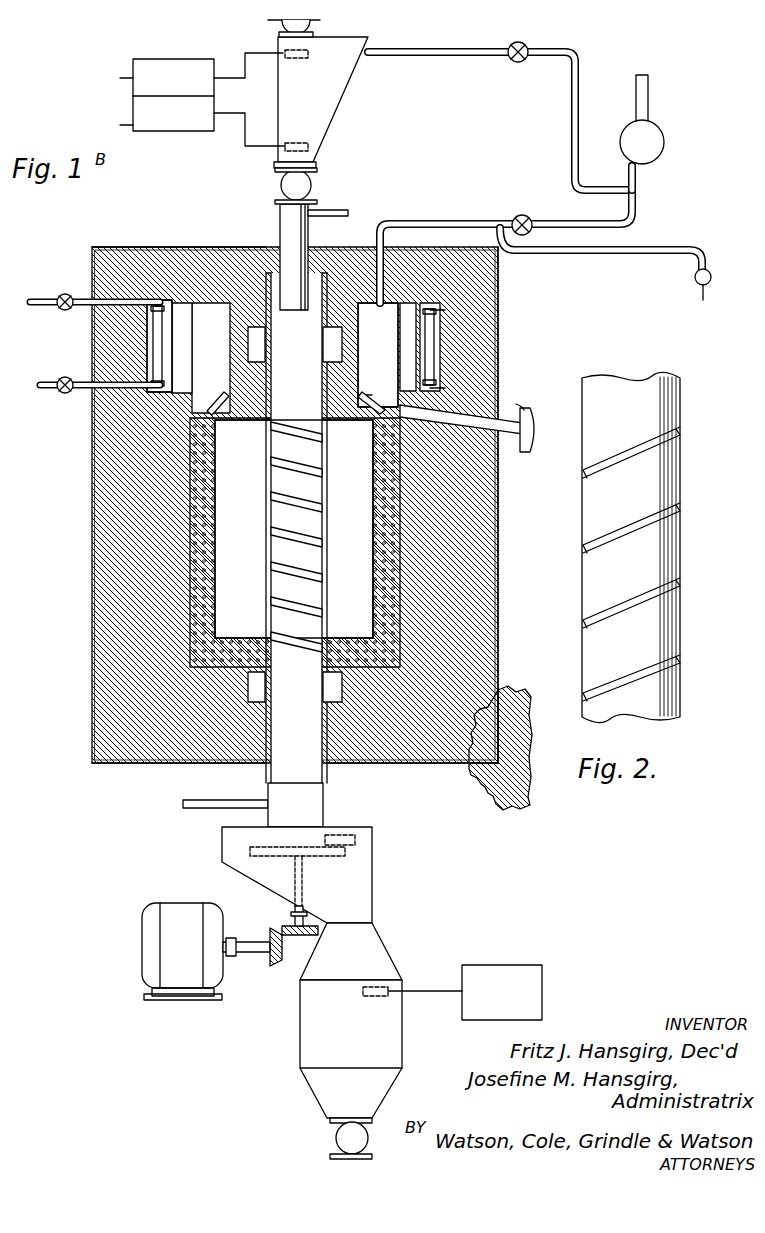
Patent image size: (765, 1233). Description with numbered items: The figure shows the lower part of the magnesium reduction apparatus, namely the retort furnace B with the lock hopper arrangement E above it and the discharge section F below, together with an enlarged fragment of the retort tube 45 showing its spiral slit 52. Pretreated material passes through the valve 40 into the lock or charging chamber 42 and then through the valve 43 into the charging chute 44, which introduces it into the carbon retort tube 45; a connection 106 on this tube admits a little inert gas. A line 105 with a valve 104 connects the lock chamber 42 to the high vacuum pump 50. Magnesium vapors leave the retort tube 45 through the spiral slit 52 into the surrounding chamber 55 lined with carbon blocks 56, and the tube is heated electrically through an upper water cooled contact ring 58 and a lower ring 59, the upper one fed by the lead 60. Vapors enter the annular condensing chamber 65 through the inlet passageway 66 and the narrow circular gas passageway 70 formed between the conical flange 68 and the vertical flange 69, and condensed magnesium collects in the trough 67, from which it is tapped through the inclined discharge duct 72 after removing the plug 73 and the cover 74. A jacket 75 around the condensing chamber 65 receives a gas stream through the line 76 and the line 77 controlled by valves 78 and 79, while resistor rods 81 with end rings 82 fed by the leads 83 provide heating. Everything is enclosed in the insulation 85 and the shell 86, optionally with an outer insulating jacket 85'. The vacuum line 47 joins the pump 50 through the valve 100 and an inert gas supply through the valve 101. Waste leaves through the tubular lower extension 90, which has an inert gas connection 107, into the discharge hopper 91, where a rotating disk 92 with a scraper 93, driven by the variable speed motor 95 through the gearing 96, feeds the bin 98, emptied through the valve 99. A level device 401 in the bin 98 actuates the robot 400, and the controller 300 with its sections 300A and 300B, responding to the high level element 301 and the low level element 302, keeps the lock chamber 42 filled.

In FIG. 1B, the valve 40 is at (303, 24).
In FIG. 1B, the lock or charging chamber 42 is at (333, 118).
In FIG. 1B, the valve 43 is at (309, 186).
In FIG. 1B, the charging chute 44 is at (284, 219).
In FIG. 1B, the retort tube 45 is at (316, 562).
In FIG. 2, the retort tube 45 is at (660, 500).
In FIG. 1B, the vacuum line 47 is at (468, 219).
In FIG. 1B, the high vacuum pump 50 is at (666, 143).
In FIG. 2, the spiral slit 52 is at (662, 522).
In FIG. 1B, the surrounding chamber 55 is at (218, 527).
In FIG. 1B, the carbon blocks 56 is at (218, 607).
In FIG. 1B, the upper water cooled contact ring 58 is at (324, 325).
In FIG. 1B, the lower contact ring 59 is at (387, 765).
In FIG. 1B, the lead 60 is at (255, 247).
In FIG. 1B, the annular condensing chamber 65 is at (428, 250).
In FIG. 1B, the inlet passageway 66 is at (373, 418).
In FIG. 1B, the trough or gutter 67 is at (382, 406).
In FIG. 1B, the conical flange 68 is at (378, 355).
In FIG. 1B, the vertical flange 69 is at (378, 424).
In FIG. 1B, the circular gas passageway 70 is at (214, 404).
In FIG. 1B, the inclined discharge duct 72 is at (498, 456).
In FIG. 1B, the refractory or carbon plug 73 is at (517, 406).
In FIG. 1B, the cover or closure 74 is at (531, 429).
In FIG. 1B, the jacket 75 is at (180, 369).
In FIG. 1B, the inlet line 76 is at (80, 390).
In FIG. 1B, the outlet line 77 is at (75, 307).
In FIG. 1B, the valve 78 is at (58, 381).
In FIG. 1B, the valve 79 is at (61, 296).
In FIG. 1B, the resistor rods 81 is at (156, 345).
In FIG. 1B, the rings 82 is at (160, 300).
In FIG. 1B, the leads 83 is at (445, 310).
In FIG. 1B, the insulation 85 is at (517, 505).
In FIG. 1B, the outer insulating jacket 85' is at (516, 748).
In FIG. 1B, the shell or outer wall 86 is at (500, 682).
In FIG. 1B, the tubular lower extension 90 is at (311, 808).
In FIG. 1B, the discharge hopper 91 is at (365, 872).
In FIG. 1B, the rotating disk 92 is at (248, 852).
In FIG. 1B, the scraper 93 is at (356, 838).
In FIG. 1B, the motor 95 is at (190, 900).
In FIG. 1B, the gearing 96 is at (272, 928).
In FIG. 1B, the waste bin 98 is at (394, 1046).
In FIG. 1B, the valve 99 is at (336, 1138).
In FIG. 1B, the valve 100 is at (524, 217).
In FIG. 1B, the valve 101 is at (694, 275).
In FIG. 1B, the valve 104 is at (522, 45).
In FIG. 1B, the line 105 is at (571, 115).
In FIG. 1B, the connection 106 is at (334, 213).
In FIG. 1B, the connection 107 is at (203, 796).
In FIG. 1B, the controlling device or robot 300 is at (167, 60).
In FIG. 1B, the high level control section 300A is at (109, 78).
In FIG. 1B, the low level control section 300B is at (109, 125).
In FIG. 1B, the high level responsive element 301 is at (305, 60).
In FIG. 1B, the low level control device 302 is at (298, 142).
In FIG. 1B, the robot 400 is at (516, 968).
In FIG. 1B, the level controlled device 401 is at (390, 985).
In FIG. 1B, the retort portion B is at (90, 522).
In FIG. 1B, the lock hopper arrangement E is at (274, 39).
In FIG. 1B, the discharge section F is at (375, 916).